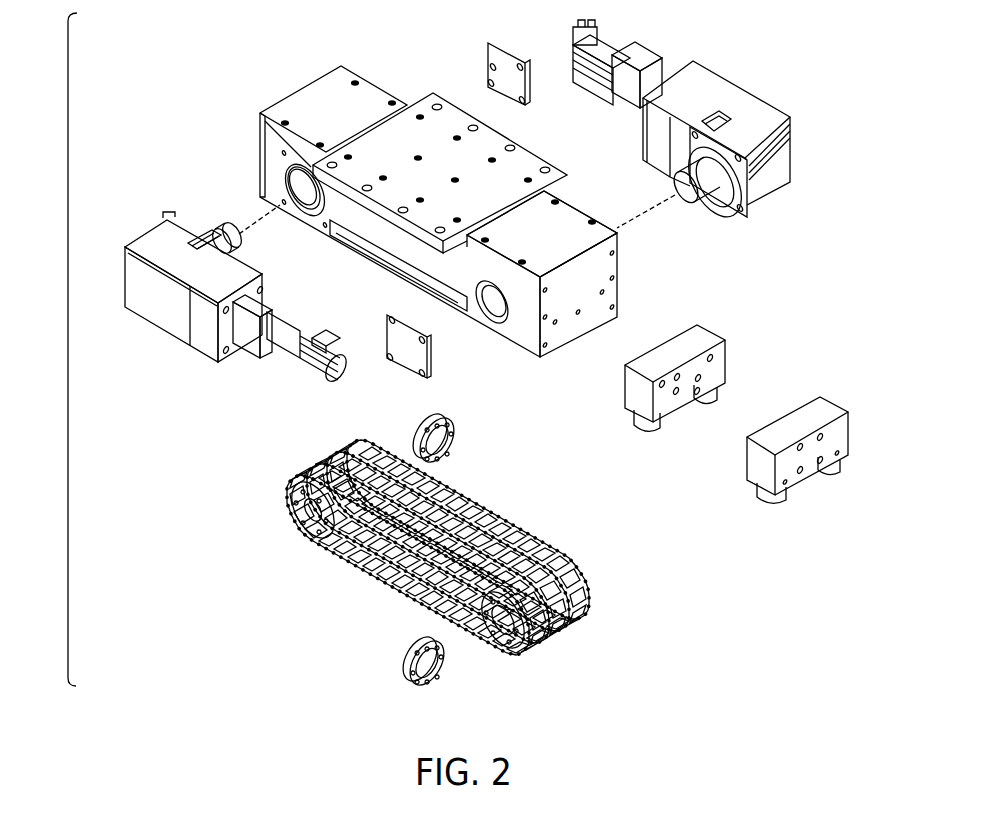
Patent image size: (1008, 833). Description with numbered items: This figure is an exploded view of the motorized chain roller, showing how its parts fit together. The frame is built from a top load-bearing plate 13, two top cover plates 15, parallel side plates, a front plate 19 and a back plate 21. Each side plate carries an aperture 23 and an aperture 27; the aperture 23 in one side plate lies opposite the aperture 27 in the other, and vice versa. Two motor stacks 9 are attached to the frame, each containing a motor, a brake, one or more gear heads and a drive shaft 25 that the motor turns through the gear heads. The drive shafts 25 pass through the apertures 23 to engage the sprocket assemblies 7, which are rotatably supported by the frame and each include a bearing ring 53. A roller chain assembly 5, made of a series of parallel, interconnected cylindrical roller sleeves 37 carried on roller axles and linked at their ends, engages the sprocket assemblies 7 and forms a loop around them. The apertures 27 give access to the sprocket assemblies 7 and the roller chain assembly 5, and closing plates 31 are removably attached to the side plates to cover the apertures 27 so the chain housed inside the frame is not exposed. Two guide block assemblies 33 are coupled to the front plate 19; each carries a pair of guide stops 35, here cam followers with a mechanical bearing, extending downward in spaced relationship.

The roller chain assembly 5 is at (432, 565).
The sprocket assembly 7 is at (299, 527).
The motor stack 9 is at (466, 202).
The top load-bearing plate 13 is at (520, 162).
The top cover plate 15 is at (303, 97).
The front plate 19 is at (622, 294).
The back plate 21 is at (258, 138).
The aperture 23 is at (294, 190).
The drive shaft 25 is at (225, 228).
The aperture 27 is at (497, 318).
The closing plate 31 is at (512, 53).
The guide block assembly 33 is at (706, 340).
The guide stop 35 is at (823, 472).
The cylindrical roller sleeve 37 is at (517, 523).
The bearing ring 53 is at (460, 452).